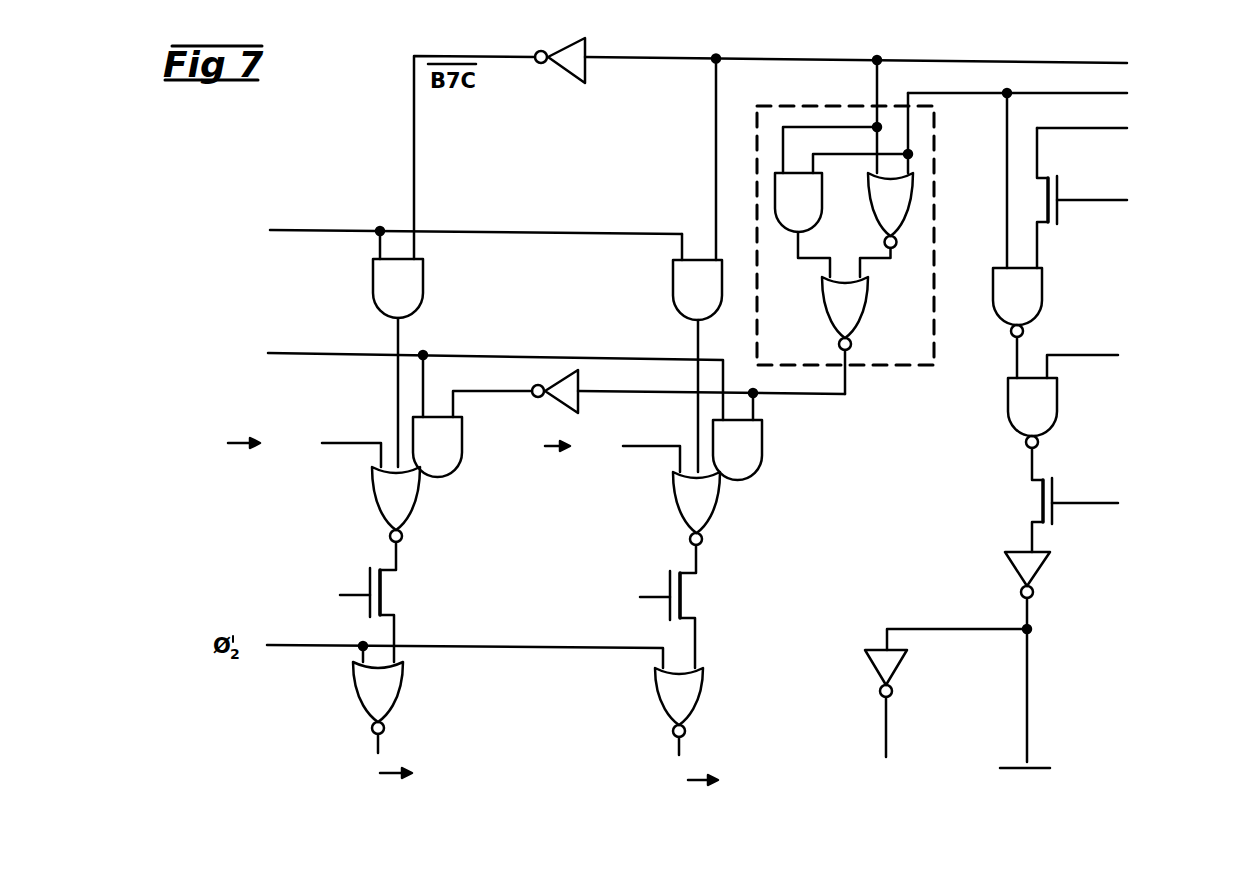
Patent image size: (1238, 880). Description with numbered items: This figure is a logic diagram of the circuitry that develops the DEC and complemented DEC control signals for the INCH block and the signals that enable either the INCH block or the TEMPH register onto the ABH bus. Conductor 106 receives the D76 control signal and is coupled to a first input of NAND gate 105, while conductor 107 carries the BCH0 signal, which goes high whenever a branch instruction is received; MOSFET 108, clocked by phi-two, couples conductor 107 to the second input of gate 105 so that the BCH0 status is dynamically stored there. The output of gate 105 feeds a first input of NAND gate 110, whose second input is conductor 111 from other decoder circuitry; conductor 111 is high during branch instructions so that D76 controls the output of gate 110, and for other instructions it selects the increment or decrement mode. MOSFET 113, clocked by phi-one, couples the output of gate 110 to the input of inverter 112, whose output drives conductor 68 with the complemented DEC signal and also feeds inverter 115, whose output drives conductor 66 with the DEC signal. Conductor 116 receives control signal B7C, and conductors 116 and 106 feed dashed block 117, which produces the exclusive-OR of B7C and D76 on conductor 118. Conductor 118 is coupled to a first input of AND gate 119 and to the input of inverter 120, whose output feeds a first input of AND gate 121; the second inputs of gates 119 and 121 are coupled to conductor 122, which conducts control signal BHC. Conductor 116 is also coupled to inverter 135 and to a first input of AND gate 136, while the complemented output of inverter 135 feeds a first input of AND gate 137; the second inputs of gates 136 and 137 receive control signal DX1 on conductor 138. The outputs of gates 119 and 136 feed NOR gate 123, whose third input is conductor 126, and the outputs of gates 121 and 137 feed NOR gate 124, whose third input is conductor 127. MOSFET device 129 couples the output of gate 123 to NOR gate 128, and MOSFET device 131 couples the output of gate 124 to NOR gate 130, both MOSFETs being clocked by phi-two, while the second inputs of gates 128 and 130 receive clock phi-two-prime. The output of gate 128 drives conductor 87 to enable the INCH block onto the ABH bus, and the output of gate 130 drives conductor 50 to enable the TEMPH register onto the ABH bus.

The conductor 50 is at (384, 742).
The conductor 66 is at (888, 733).
The conductor 68 is at (1028, 708).
The conductor 87 is at (683, 746).
The NAND gate 105 is at (1045, 302).
The conductor 106 is at (1100, 97).
The conductor 107 is at (1108, 130).
The MOSFET 108 is at (1050, 228).
The NAND gate 110 is at (1005, 418).
The conductor 111 is at (1078, 356).
The inverter 112 is at (1040, 552).
The MOSFET 113 is at (1038, 495).
The inverter 115 is at (900, 672).
The conductor 116 is at (1072, 68).
The dashed block 117 is at (936, 256).
The conductor 118 is at (848, 386).
The AND gate 119 is at (757, 478).
The inverter 120 is at (583, 378).
The AND gate 121 is at (455, 470).
The conductor 122 is at (494, 353).
The NOR gate 123 is at (713, 515).
The NOR gate 124 is at (414, 515).
The conductor 126 is at (665, 446).
The conductor 127 is at (356, 438).
The NOR gate 128 is at (705, 682).
The MOSFET device 129 is at (690, 598).
The NOR gate 130 is at (405, 677).
The MOSFET device 131 is at (392, 597).
The inverter 135 is at (590, 70).
The AND gate 136 is at (672, 293).
The AND gate 137 is at (425, 291).
The conductor 138 is at (318, 230).